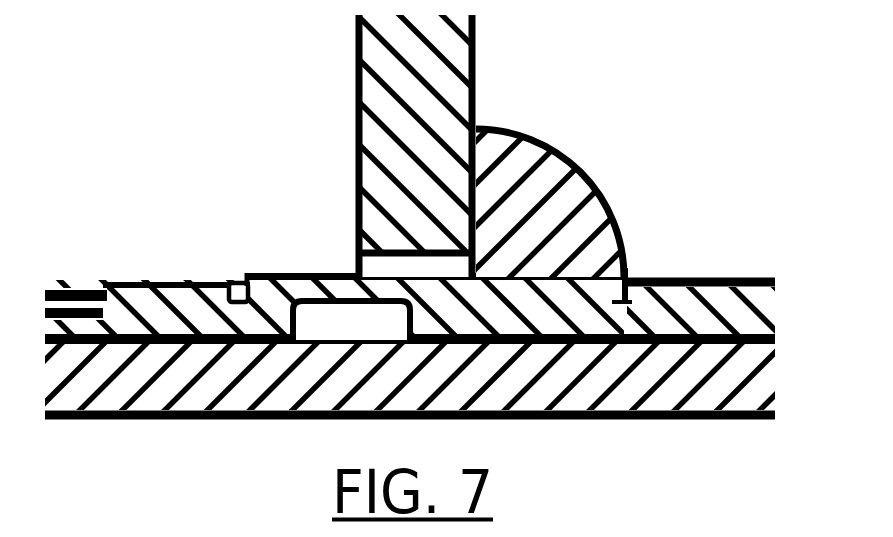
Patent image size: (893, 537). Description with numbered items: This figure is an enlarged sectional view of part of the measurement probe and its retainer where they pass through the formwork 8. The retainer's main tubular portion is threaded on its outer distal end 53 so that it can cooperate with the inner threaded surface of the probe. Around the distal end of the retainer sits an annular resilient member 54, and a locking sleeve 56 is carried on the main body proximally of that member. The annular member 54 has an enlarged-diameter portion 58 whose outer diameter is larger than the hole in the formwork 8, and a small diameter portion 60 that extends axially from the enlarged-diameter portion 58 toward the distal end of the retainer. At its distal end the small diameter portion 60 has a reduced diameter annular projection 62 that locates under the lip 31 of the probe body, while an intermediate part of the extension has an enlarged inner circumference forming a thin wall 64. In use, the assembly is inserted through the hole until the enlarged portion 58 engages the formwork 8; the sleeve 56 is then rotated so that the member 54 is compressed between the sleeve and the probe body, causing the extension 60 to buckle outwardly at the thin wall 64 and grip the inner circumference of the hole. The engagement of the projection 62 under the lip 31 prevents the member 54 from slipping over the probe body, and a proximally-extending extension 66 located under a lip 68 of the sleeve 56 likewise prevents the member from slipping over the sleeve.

The formwork 8 is at (372, 162).
The lip 31 is at (232, 281).
The outer distal end 53 is at (103, 285).
The annular resilient member 54 is at (446, 145).
The locking sleeve 56 is at (750, 278).
The enlarged-diameter portion 58 is at (547, 140).
The small diameter portion 60 is at (280, 272).
The reduced diameter annular projection 62 is at (213, 283).
The thin wall 64 is at (333, 273).
The proximally-extending extension 66 is at (662, 280).
The lip 68 is at (634, 274).